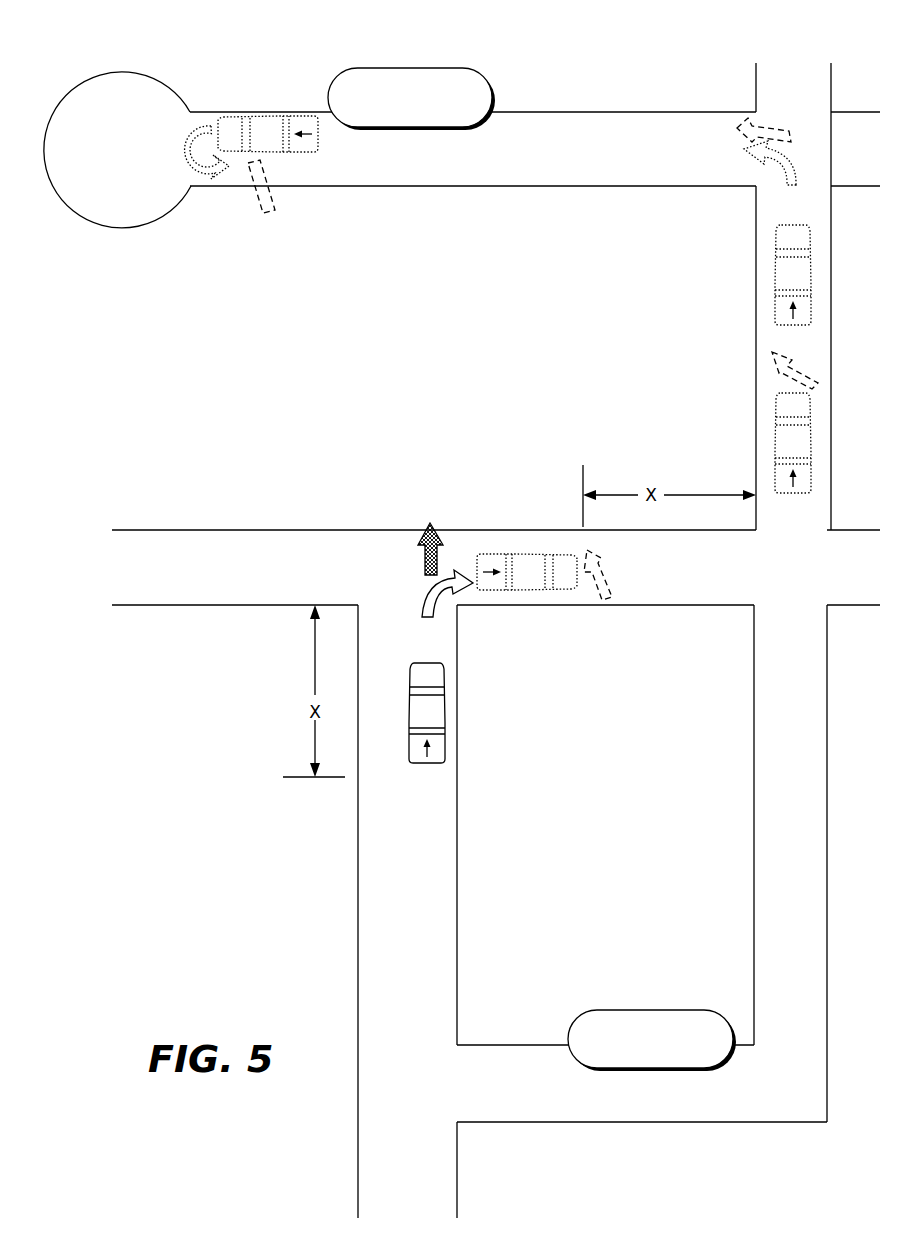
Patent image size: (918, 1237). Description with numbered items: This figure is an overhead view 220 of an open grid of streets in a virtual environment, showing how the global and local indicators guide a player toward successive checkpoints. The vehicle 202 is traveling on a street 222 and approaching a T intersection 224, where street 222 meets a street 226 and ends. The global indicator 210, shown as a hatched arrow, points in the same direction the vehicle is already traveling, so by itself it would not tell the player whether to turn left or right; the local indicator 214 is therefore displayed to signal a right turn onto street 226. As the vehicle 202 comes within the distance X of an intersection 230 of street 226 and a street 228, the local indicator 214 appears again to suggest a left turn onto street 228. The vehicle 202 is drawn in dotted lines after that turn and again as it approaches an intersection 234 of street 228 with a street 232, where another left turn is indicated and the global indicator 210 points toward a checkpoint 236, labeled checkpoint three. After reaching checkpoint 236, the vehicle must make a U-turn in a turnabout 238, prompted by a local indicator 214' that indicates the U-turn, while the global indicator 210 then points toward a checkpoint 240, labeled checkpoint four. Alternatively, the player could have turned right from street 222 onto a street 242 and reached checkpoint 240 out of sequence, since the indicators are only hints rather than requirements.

The vehicle 202 is at (265, 115).
The global indicator 210 is at (262, 203).
The local indicator 214 is at (609, 394).
The local indicator 214' is at (174, 152).
The overhead view 220 is at (244, 850).
The street 222 is at (458, 812).
The T intersection 224 is at (390, 560).
The street 226 is at (237, 530).
The street 228 is at (754, 697).
The intersection 230 is at (777, 578).
The street 232 is at (668, 115).
The intersection 234 is at (802, 152).
The checkpoint 236 is at (493, 90).
The turnabout 238 is at (121, 210).
The checkpoint 240 is at (630, 1010).
The street 242 is at (540, 1047).